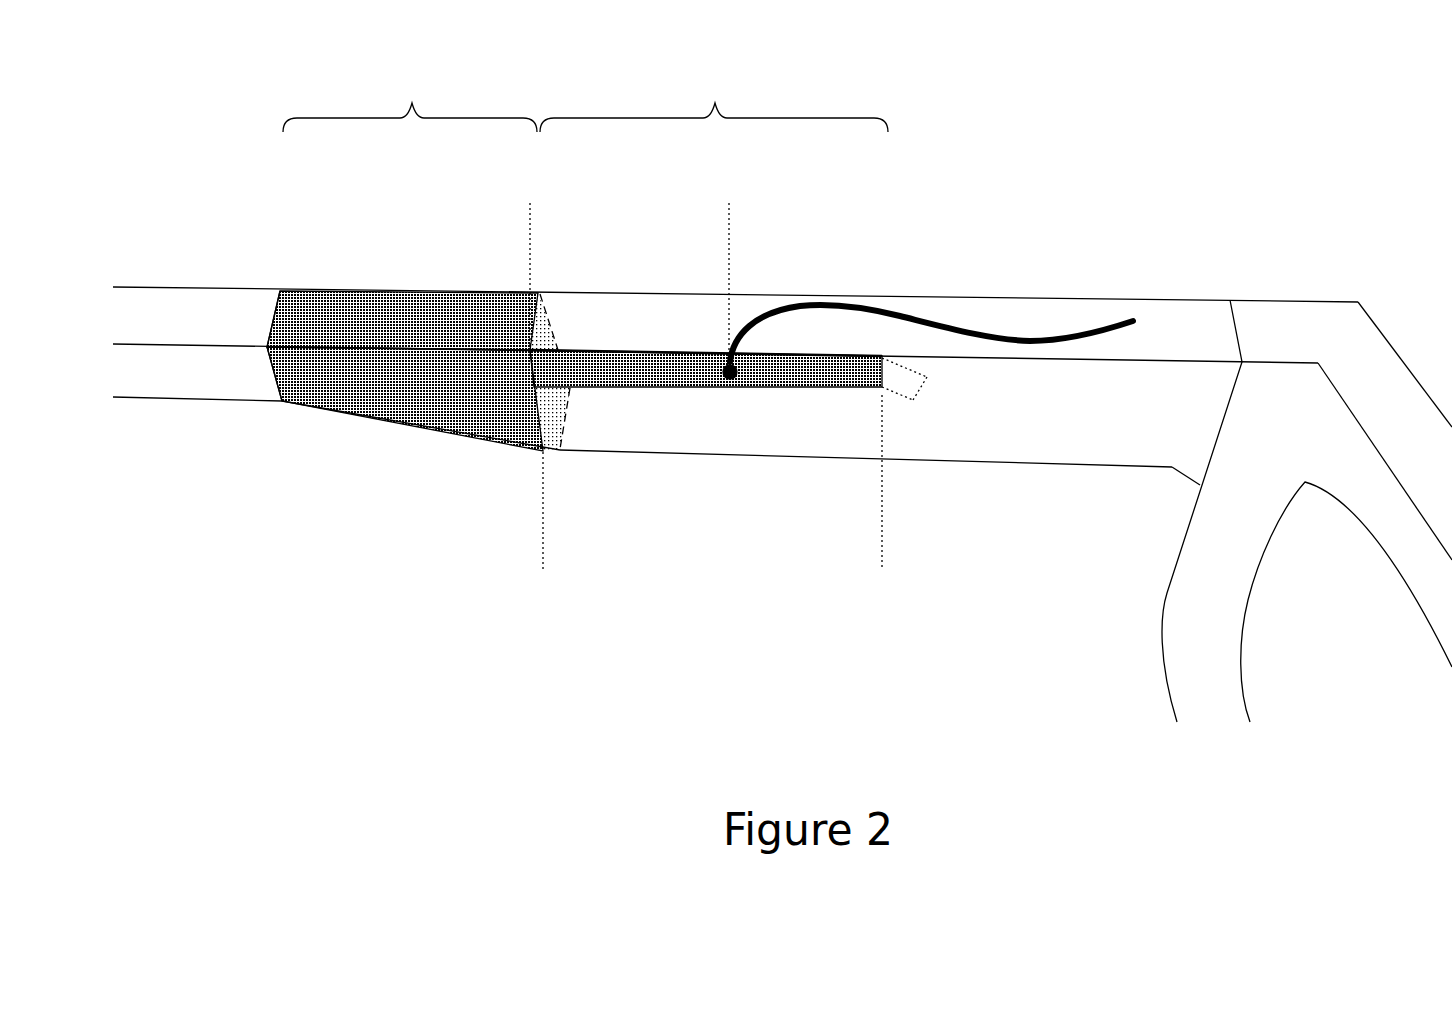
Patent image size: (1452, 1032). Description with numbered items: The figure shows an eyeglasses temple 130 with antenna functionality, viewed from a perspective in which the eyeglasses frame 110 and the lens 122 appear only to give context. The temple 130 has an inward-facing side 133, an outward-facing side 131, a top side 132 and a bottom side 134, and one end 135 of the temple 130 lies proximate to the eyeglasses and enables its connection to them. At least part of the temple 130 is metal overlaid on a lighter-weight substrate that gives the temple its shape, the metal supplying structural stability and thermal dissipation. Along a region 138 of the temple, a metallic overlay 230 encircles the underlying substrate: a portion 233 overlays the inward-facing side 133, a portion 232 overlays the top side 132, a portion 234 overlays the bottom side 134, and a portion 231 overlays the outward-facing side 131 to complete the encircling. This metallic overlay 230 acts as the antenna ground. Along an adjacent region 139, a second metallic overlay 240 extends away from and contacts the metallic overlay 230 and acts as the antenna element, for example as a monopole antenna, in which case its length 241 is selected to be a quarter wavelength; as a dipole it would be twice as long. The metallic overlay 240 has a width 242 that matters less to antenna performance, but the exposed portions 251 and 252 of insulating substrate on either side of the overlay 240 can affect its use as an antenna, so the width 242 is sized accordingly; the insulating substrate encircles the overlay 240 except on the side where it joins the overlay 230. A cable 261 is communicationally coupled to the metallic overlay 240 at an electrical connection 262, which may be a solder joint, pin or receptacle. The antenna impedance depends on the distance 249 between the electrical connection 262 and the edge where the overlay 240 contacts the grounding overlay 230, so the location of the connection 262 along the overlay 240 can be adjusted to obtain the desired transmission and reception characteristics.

The eyeglasses frame 110 is at (1115, 716).
The lens 122 is at (1338, 665).
The eyeglasses temple 130 is at (943, 142).
The outward-facing side 131 is at (1167, 290).
The top side 132 is at (1148, 349).
The inward-facing side 133 is at (1061, 422).
The bottom side 134 is at (963, 470).
The end of the temple 135 is at (1228, 323).
The region of the temple 138 is at (410, 105).
The region of the temple 139 is at (714, 105).
The metallic overlay 230 is at (402, 473).
The portion of the metallic overlay 231 is at (533, 325).
The portion of the metallic overlay 232 is at (339, 335).
The portion of the metallic overlay 233 is at (423, 400).
The portion of the metallic overlay 234 is at (555, 402).
The metallic overlay 240 is at (615, 384).
The length 241 is at (543, 555).
The width 242 is at (912, 399).
The distance 249 is at (530, 211).
The exposed portion of insulating substrate 251 is at (693, 394).
The exposed portion of insulating substrate 252 is at (695, 302).
The cable 261 is at (855, 302).
The electrical connection 262 is at (738, 383).